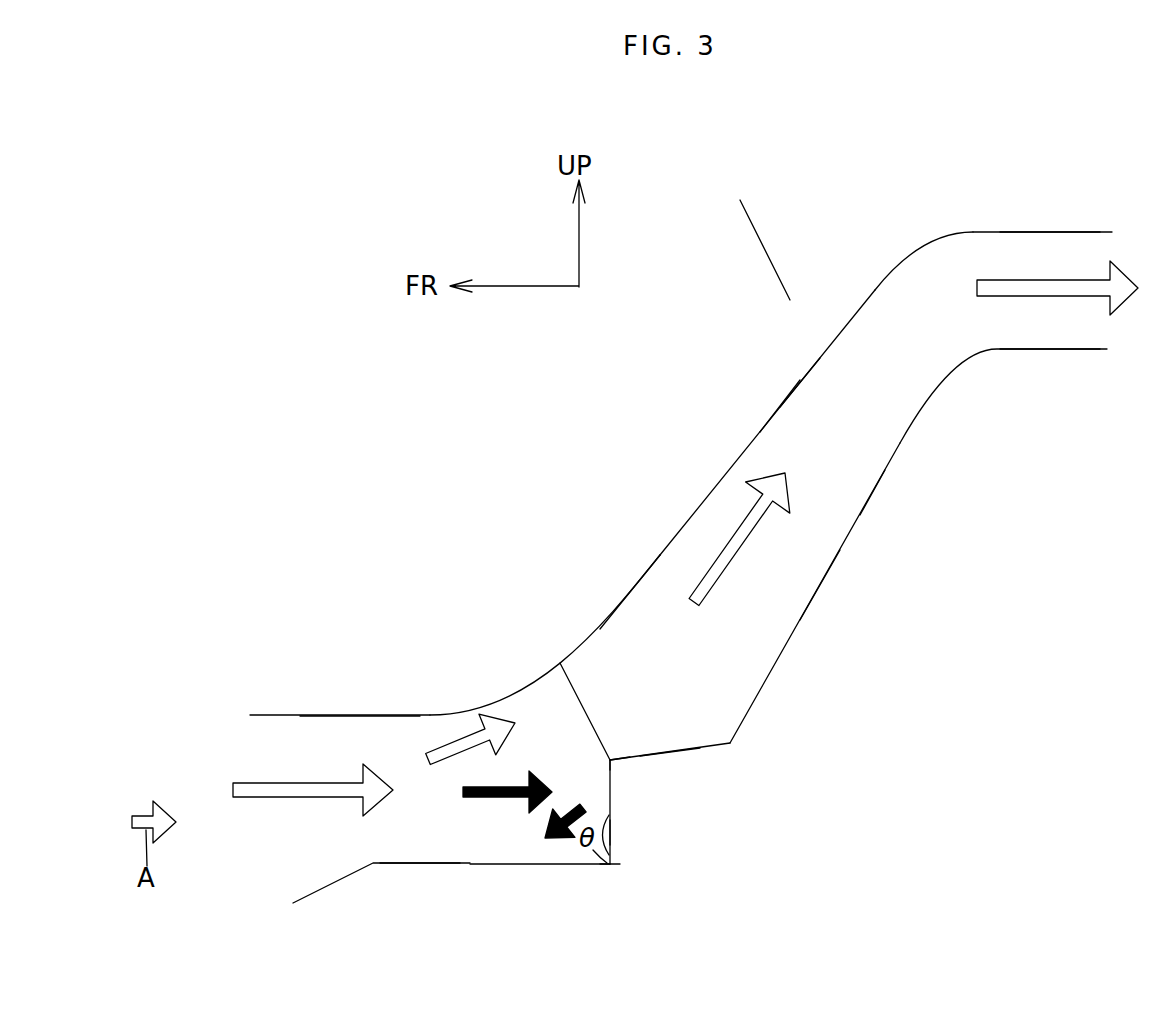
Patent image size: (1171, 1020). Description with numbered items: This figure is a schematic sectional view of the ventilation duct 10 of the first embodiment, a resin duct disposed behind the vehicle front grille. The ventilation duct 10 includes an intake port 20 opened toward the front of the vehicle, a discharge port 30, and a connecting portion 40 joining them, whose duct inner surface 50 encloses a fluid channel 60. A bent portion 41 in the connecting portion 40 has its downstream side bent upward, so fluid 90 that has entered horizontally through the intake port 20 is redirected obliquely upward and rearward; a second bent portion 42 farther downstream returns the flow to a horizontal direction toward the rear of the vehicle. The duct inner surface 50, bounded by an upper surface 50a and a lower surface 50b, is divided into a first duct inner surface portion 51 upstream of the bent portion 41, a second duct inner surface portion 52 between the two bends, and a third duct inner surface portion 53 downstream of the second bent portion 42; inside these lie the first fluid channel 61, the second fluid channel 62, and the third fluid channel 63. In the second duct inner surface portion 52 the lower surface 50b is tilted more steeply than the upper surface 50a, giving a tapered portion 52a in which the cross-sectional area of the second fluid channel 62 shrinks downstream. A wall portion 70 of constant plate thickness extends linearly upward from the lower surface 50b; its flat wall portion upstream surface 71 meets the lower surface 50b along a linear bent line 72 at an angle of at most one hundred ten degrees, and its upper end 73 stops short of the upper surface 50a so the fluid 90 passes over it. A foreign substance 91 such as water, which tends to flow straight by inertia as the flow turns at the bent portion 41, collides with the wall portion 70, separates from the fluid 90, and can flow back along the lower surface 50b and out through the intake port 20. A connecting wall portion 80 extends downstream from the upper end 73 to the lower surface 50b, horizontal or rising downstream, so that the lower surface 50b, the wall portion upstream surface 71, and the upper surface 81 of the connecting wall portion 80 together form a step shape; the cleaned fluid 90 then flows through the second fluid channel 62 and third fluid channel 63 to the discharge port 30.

The ventilation duct 10 is at (762, 235).
The intake port 20 is at (250, 715).
The discharge port 30 is at (1112, 232).
The connecting portion 40 is at (747, 442).
The bent portion 41 is at (478, 665).
The second bent portion 42 is at (893, 225).
The duct inner surface 50 is at (800, 376).
The upper surface 50a is at (620, 598).
The lower surface 50b is at (489, 864).
The first duct inner surface portion 51 is at (420, 864).
The second duct inner surface portion 52 is at (820, 585).
The tapered portion 52a is at (868, 500).
The third duct inner surface portion 53 is at (1050, 350).
The fluid channel 60 is at (667, 694).
The first fluid channel 61 is at (433, 841).
The second fluid channel 62 is at (795, 577).
The third fluid channel 63 is at (1047, 334).
The wall portion 70 is at (611, 788).
The wall portion upstream surface 71 is at (611, 828).
The linear bent line 72 is at (612, 867).
The upper end 73 is at (608, 759).
The connecting wall portion 80 is at (700, 752).
The upper surface of the connecting wall portion 81 is at (658, 753).
The fluid 90 is at (290, 795).
The foreign substance 91 is at (490, 798).